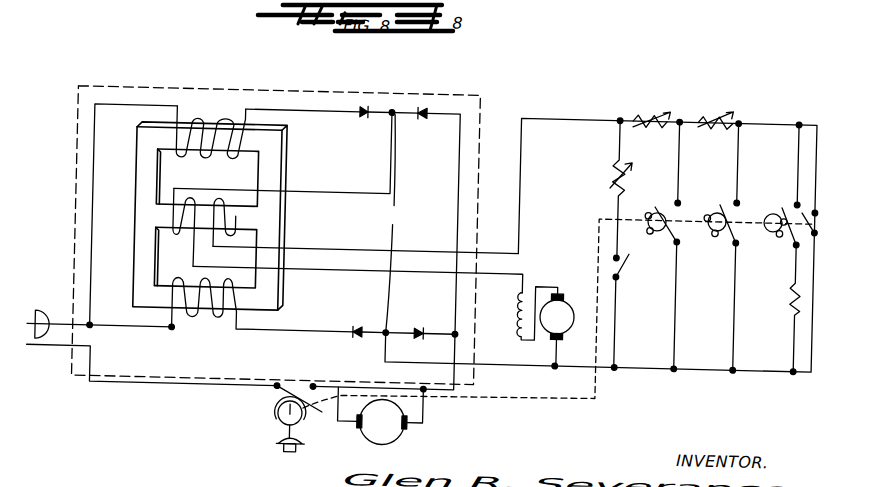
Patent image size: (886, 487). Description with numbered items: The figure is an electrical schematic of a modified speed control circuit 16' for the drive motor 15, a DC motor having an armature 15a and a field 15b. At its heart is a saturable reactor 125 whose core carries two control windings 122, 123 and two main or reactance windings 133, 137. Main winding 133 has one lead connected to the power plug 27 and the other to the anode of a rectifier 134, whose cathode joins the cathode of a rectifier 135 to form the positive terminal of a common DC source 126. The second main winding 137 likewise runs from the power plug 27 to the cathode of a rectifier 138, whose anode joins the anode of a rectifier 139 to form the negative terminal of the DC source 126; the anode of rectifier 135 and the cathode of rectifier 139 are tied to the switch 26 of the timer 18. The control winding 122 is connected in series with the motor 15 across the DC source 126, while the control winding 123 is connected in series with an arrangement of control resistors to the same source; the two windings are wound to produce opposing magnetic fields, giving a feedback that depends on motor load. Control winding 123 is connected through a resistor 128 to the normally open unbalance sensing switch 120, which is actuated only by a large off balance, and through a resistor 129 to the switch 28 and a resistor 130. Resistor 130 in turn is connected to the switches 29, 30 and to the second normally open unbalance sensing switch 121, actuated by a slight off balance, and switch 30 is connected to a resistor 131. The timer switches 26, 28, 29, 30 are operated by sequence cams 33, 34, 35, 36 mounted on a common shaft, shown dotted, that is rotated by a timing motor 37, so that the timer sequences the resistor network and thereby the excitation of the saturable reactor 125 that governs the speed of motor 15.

The drive motor 15 is at (561, 272).
The armature 15a is at (552, 321).
The field 15b is at (521, 303).
The speed control circuit 16' is at (276, 217).
The timer 18 is at (295, 456).
The switch 26 is at (308, 390).
The power plug 27 is at (42, 328).
The switch 28 is at (674, 202).
The switch 29 is at (729, 203).
The switch 30 is at (798, 232).
The sequence cam 33 is at (282, 412).
The sequence cam 34 is at (653, 227).
The sequence cam 35 is at (716, 230).
The sequence cam 36 is at (772, 228).
The timing motor 37 is at (371, 442).
The unbalance sensing switch 120 is at (628, 256).
The unbalance sensing switch 121 is at (799, 187).
The control winding 122 is at (160, 242).
The control winding 123 is at (235, 221).
The saturable reactor 125 is at (278, 156).
The common DC source 126 is at (396, 223).
The resistor 128 is at (613, 176).
The resistor 129 is at (639, 110).
The resistor 130 is at (699, 109).
The resistor 131 is at (791, 290).
The main winding 133 is at (189, 128).
The rectifier 134 is at (359, 120).
The rectifier 135 is at (419, 121).
The main winding 137 is at (212, 324).
The rectifier 138 is at (365, 325).
The rectifier 139 is at (422, 326).